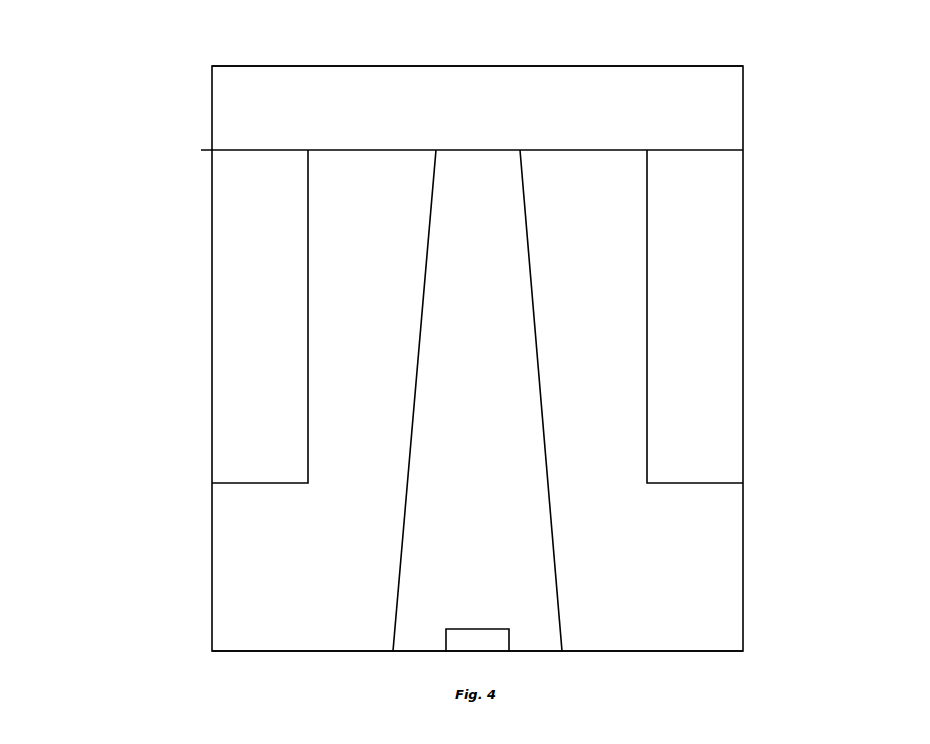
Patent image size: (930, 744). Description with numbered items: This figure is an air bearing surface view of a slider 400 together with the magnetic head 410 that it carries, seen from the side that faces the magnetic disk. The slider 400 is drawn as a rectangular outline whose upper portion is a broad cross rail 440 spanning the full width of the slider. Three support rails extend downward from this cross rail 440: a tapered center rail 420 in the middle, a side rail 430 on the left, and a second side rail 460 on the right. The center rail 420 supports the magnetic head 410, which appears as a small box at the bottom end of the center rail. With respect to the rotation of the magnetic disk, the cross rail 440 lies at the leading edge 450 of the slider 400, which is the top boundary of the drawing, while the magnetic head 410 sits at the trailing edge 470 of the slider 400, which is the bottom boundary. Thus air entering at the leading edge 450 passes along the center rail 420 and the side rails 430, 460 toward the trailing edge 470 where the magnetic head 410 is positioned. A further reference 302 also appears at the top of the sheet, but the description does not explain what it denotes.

The slider 400 is at (72, 603).
The magnetic head 410 is at (467, 640).
The center rail 420 is at (447, 471).
The side rail 430 is at (255, 286).
The cross rail 440 is at (255, 97).
The leading edge 450 is at (285, 66).
The side rail 460 is at (721, 307).
The trailing edge 470 is at (647, 651).
The housing 302 is at (732, 4).